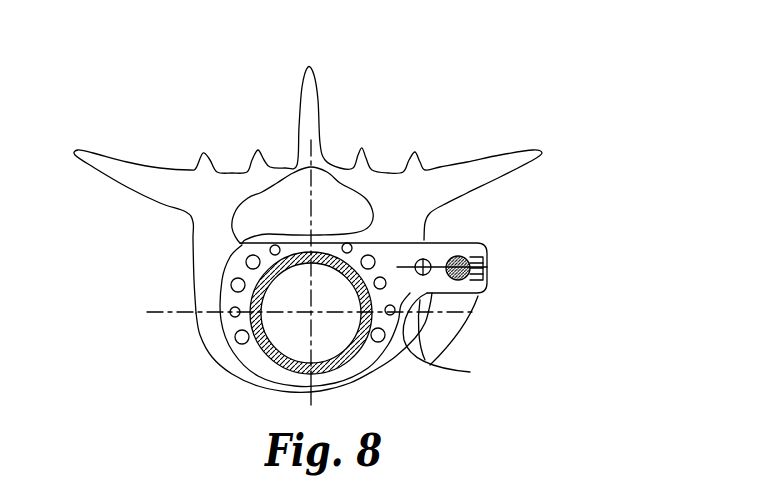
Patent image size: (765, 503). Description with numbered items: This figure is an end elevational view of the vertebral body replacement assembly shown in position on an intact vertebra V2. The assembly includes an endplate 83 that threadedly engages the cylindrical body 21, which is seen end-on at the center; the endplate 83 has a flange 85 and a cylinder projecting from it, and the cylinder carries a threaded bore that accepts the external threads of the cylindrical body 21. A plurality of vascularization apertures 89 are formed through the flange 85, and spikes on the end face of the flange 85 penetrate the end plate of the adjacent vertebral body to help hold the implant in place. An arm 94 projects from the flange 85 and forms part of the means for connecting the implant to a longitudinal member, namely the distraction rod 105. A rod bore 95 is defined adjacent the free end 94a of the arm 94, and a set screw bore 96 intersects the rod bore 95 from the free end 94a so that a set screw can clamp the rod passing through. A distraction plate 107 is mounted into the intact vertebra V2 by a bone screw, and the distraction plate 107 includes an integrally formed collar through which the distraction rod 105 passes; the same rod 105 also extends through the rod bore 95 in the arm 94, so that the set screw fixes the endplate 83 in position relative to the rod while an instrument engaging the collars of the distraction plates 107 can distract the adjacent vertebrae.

The vertebra V2 is at (420, 168).
The endplate 83 is at (434, 231).
The flange 85 is at (233, 262).
The cylindrical body 21 is at (358, 347).
The vascularization apertures 89 is at (270, 251).
The arm 94 is at (448, 240).
The rod bore 95 is at (470, 257).
The set screw bore 96 is at (484, 262).
The distraction rod 105 is at (484, 272).
The free end of the arm 94a is at (484, 283).
The distraction plate 107 is at (470, 318).